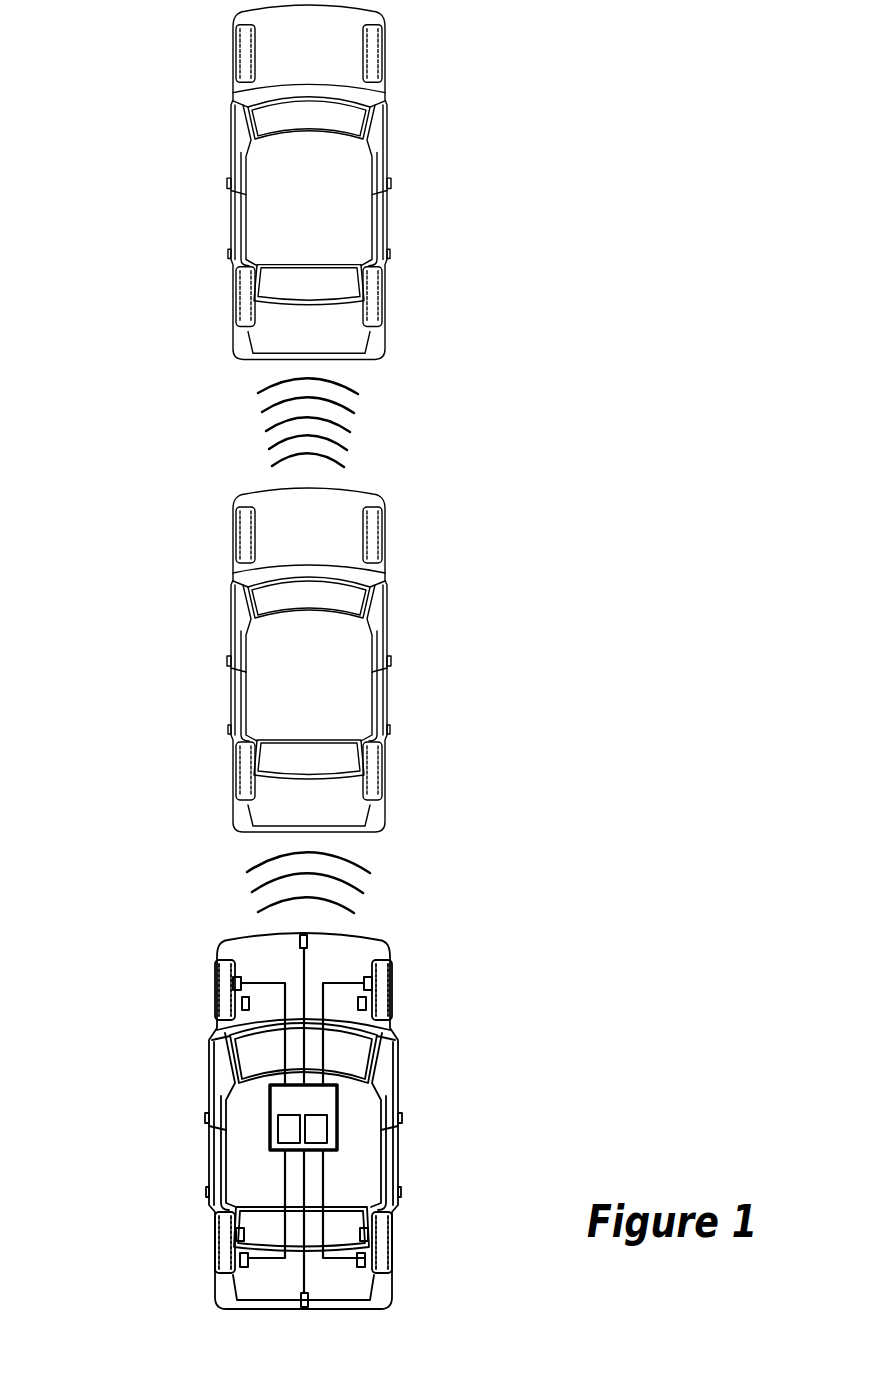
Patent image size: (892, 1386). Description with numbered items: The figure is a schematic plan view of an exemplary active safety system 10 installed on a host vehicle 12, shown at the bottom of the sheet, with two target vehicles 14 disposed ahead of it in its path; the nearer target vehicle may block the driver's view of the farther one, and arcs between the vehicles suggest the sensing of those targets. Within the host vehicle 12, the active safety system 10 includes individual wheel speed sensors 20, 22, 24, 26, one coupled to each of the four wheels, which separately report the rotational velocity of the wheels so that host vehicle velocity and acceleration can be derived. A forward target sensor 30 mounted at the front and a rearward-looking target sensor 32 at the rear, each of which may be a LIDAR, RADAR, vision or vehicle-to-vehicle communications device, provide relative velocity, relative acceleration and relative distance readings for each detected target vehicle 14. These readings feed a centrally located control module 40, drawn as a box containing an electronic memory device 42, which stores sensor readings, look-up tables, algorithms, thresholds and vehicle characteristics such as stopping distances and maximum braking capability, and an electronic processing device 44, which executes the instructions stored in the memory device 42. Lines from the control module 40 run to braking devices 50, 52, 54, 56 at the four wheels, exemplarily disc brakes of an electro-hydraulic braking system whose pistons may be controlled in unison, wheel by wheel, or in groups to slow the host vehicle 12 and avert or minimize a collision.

The active safety system 10 is at (461, 982).
The host vehicle 12 is at (130, 1116).
The target vehicles 14 is at (195, 671).
The wheel speed sensor 20 is at (362, 1012).
The wheel speed sensor 22 is at (365, 1268).
The wheel speed sensor 24 is at (240, 1267).
The wheel speed sensor 26 is at (245, 1012).
The target sensor 30 is at (300, 937).
The target sensor 32 is at (300, 1299).
The control module 40 is at (306, 1189).
The electronic memory device 42 is at (283, 1134).
The electronic processing device 44 is at (323, 1128).
The braking device 50 is at (364, 982).
The braking device 52 is at (368, 1237).
The braking device 54 is at (236, 1240).
The braking device 56 is at (238, 978).